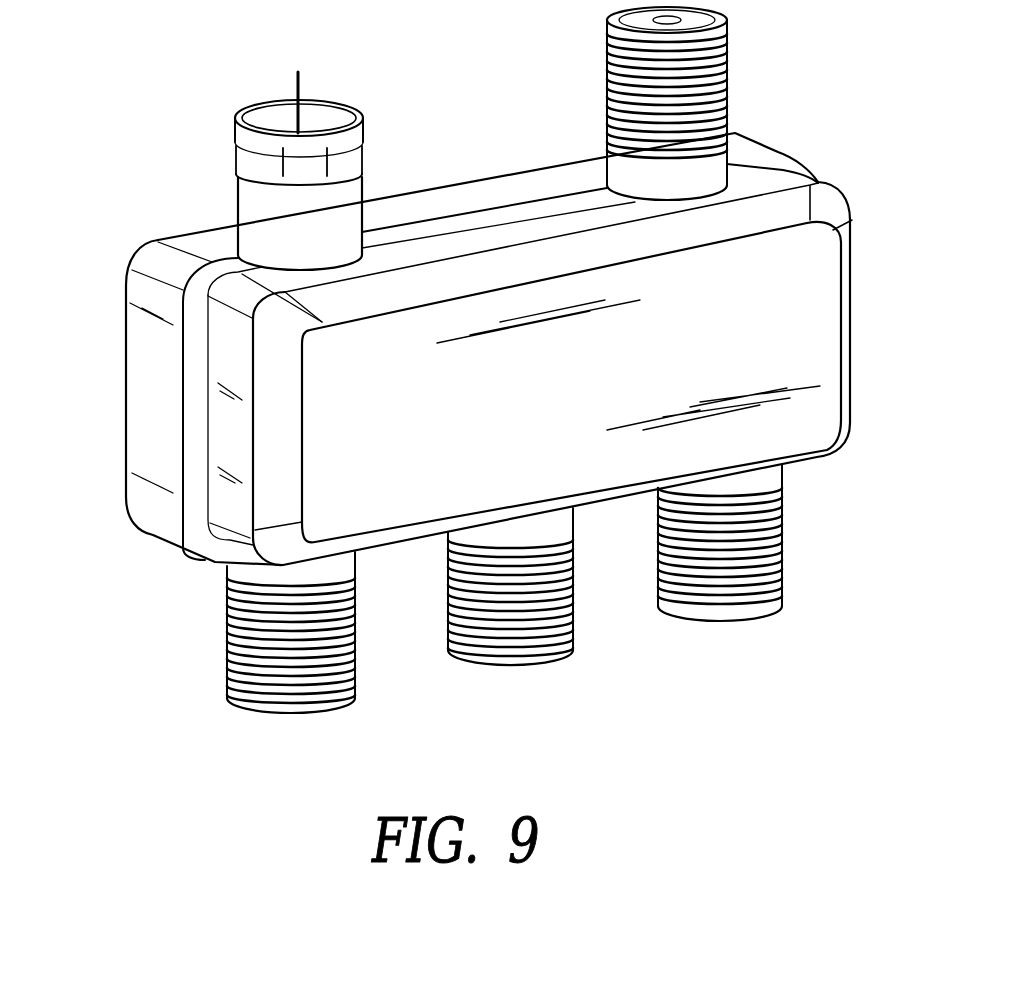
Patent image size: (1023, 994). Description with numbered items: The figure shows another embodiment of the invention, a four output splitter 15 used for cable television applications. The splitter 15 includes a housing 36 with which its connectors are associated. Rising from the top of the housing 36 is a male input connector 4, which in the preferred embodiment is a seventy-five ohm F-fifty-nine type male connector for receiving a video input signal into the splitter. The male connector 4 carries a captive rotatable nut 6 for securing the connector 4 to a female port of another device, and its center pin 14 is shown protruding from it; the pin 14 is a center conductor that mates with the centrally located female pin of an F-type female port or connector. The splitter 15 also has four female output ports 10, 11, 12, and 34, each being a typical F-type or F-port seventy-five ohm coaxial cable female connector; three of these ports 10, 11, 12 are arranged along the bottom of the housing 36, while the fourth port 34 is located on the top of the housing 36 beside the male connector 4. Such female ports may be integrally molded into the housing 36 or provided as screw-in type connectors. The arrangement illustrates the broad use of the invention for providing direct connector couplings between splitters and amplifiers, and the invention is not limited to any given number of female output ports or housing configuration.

The male connector 4 is at (350, 103).
The captive rotatable nut 6 is at (347, 150).
The center pin 14 is at (296, 85).
The female port 34 is at (727, 82).
The four output splitter 15 is at (883, 188).
The housing 36 is at (851, 335).
The female port 10 is at (228, 668).
The female port 11 is at (577, 612).
The female port 12 is at (782, 550).